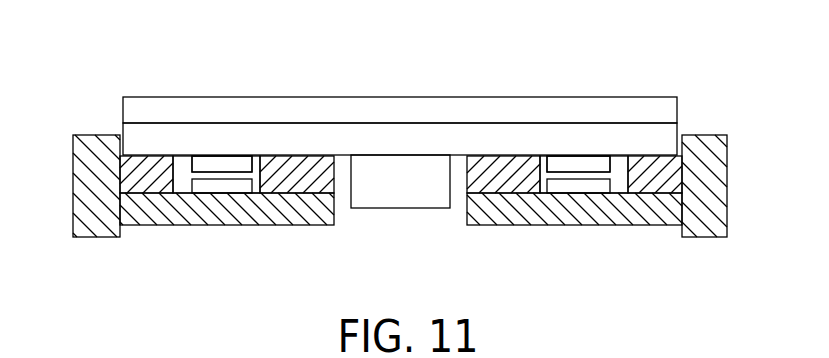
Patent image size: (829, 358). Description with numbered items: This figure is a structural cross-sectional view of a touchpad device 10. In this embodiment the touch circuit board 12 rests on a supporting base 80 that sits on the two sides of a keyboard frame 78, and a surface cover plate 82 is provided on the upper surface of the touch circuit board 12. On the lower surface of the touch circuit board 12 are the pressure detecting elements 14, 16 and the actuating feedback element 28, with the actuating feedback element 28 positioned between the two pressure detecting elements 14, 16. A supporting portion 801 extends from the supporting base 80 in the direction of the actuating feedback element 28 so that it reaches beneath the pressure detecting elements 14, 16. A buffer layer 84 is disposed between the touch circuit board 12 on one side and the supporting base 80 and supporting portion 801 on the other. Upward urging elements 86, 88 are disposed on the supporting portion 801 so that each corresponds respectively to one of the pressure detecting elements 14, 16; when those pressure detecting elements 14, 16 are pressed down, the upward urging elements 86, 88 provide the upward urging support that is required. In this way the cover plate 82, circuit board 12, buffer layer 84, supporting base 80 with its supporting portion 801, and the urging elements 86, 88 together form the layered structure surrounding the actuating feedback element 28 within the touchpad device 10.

The touchpad device 10 is at (56, 82).
The touch circuit board 12 is at (422, 137).
The pressure detecting element 14 is at (222, 165).
The pressure detecting element 16 is at (581, 163).
The actuating feedback element 28 is at (398, 197).
The keyboard frame 78 is at (95, 140).
The supporting base 80 is at (123, 218).
The supporting portion 801 is at (265, 207).
The surface cover plate 82 is at (367, 110).
The buffer layer 84 is at (160, 182).
The upward urging element 86 is at (219, 184).
The upward urging element 88 is at (575, 185).